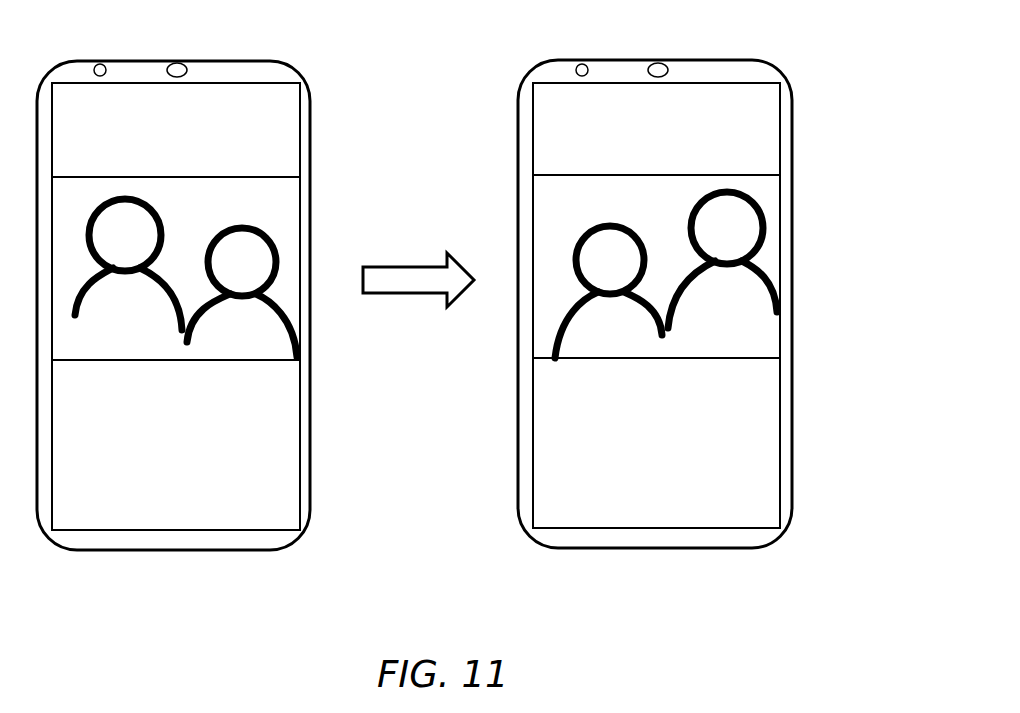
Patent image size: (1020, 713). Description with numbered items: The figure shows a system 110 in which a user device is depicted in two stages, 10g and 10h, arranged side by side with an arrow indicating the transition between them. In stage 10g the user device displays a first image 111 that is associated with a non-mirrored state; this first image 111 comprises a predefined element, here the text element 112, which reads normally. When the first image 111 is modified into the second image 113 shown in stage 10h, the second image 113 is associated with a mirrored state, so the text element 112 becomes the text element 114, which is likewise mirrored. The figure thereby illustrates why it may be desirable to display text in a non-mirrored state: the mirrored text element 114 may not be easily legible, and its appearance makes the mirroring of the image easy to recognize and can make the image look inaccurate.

The stage of user device 10g is at (267, 60).
The stage of user device 10h is at (705, 58).
The first image 111 is at (293, 212).
The text element 112 is at (127, 336).
The second image 113 is at (773, 197).
The text element 114 is at (722, 325).
The system 110 is at (778, 575).